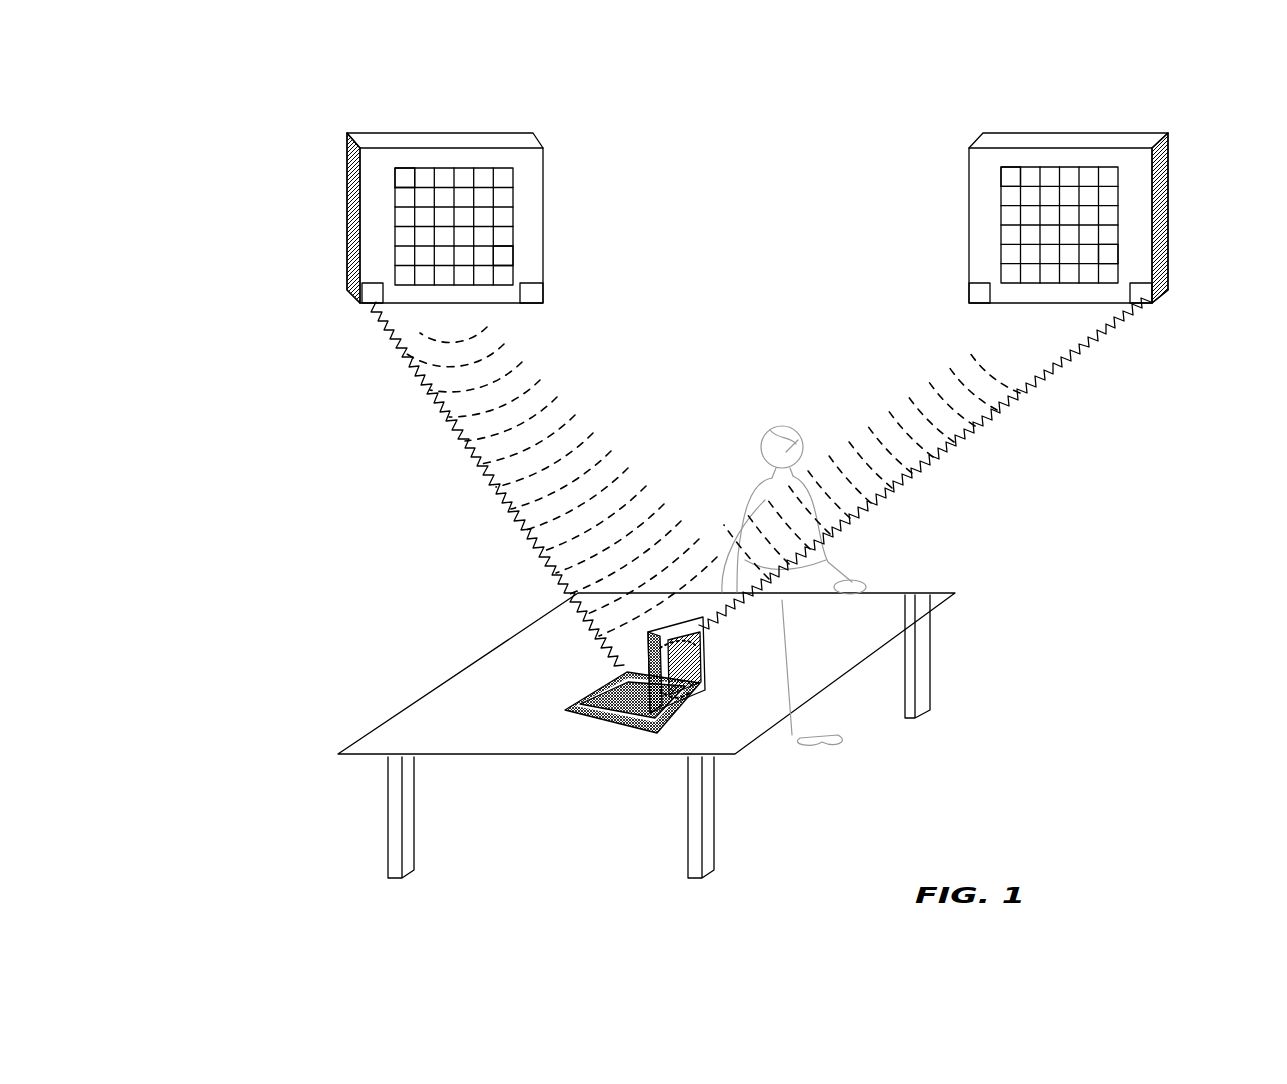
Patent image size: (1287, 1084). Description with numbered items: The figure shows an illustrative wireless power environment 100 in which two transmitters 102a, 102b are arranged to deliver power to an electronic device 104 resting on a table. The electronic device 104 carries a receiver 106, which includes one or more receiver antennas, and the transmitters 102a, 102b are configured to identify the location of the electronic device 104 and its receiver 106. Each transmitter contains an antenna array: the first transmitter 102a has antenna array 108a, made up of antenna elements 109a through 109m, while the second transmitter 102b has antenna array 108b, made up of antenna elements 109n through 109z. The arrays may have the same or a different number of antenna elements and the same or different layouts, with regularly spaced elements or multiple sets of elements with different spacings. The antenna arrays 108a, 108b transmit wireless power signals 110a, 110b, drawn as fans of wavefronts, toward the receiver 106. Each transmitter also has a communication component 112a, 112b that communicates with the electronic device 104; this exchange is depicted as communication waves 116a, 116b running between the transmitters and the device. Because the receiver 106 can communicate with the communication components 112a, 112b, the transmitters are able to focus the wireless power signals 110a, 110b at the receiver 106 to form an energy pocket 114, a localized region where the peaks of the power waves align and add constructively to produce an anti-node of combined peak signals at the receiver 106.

The wireless power environment 100 is at (239, 139).
The transmitter 102a is at (352, 218).
The transmitter 102b is at (968, 218).
The electronic device 104 is at (575, 710).
The receiver 106 is at (694, 672).
The antenna array 108a is at (516, 181).
The antenna array 108b is at (1120, 172).
The antenna element 109a is at (405, 175).
The antenna element 109m is at (505, 268).
The antenna element 109n is at (1010, 175).
The antenna element 109z is at (1112, 268).
The wireless power signals 110a is at (573, 433).
The wireless power signals 110b is at (896, 395).
The communication component 112a is at (358, 296).
The communication component 112b is at (1150, 285).
The energy pocket 114 is at (692, 703).
The communication waves 116a is at (453, 418).
The communication waves 116b is at (1002, 418).